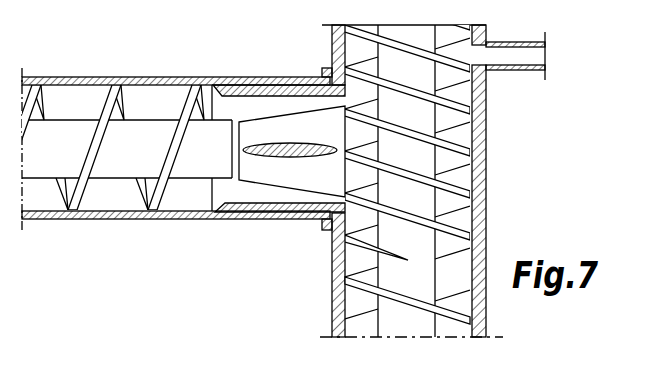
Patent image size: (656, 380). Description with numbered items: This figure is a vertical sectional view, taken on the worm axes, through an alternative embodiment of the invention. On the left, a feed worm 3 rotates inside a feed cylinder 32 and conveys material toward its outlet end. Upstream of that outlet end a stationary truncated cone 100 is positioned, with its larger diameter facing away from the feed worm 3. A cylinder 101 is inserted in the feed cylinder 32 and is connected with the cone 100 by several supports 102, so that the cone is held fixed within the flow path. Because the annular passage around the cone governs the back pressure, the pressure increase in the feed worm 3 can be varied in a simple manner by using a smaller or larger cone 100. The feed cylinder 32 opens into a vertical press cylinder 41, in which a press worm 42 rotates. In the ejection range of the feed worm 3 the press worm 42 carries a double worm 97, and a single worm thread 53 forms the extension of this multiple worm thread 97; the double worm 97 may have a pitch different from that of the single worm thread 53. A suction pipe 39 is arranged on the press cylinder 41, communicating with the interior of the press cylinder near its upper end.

The feed worm 3 is at (138, 132).
The feed cylinder 32 is at (176, 220).
The suction pipe 39 is at (537, 70).
The press cylinder 41 is at (480, 205).
The press worm 42 is at (427, 328).
The single worm thread 53 is at (470, 320).
The double worm 97 is at (456, 160).
The stationary truncated cone 100 is at (285, 125).
The cylinder 101 is at (300, 88).
The supports 102 is at (290, 155).